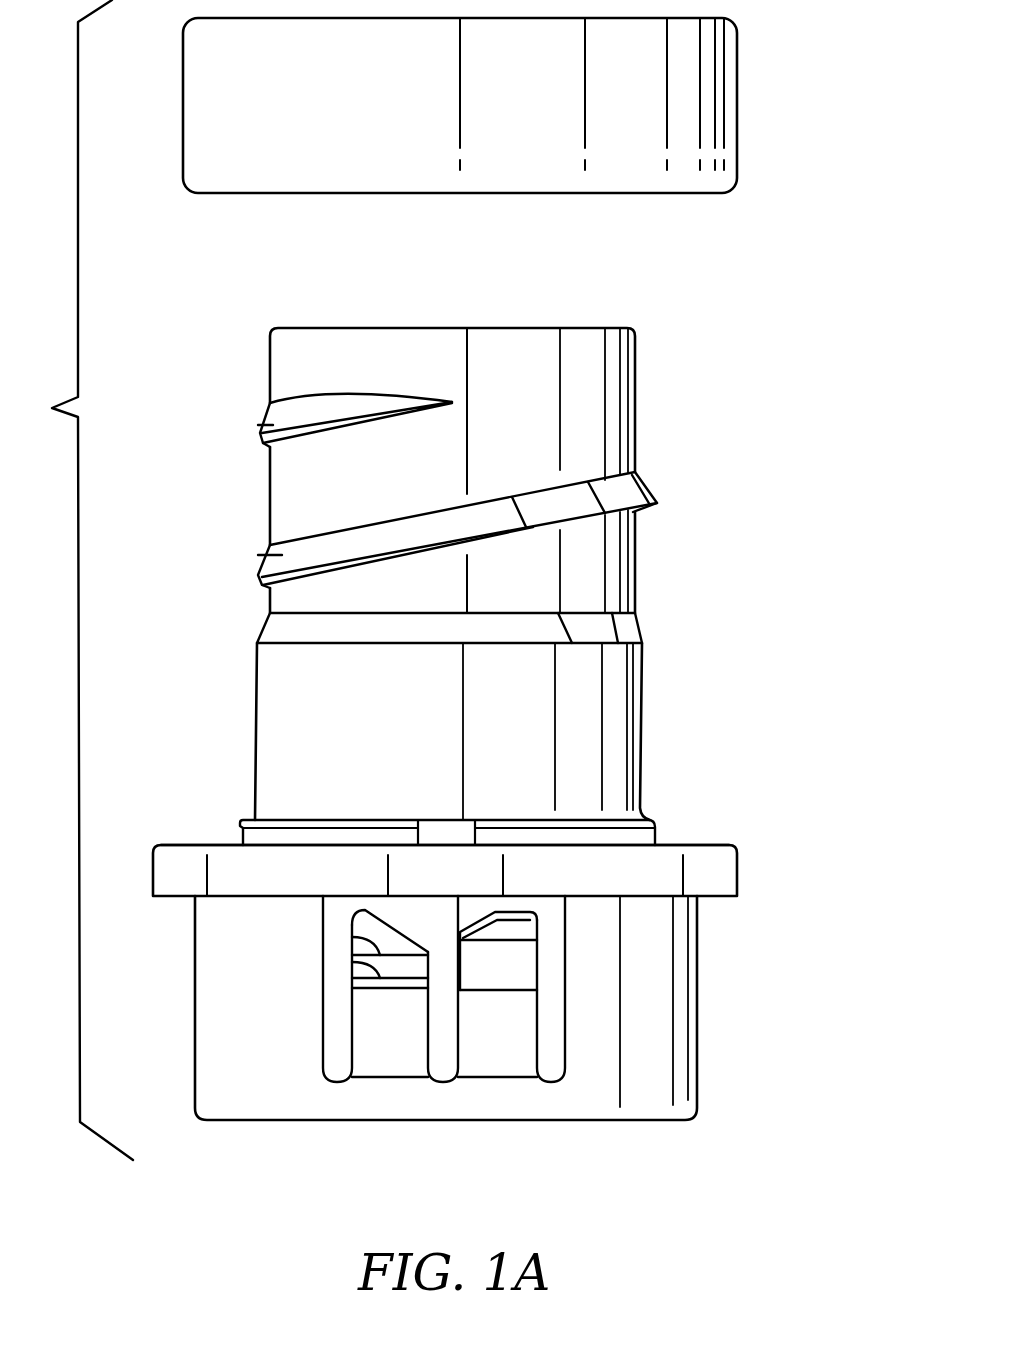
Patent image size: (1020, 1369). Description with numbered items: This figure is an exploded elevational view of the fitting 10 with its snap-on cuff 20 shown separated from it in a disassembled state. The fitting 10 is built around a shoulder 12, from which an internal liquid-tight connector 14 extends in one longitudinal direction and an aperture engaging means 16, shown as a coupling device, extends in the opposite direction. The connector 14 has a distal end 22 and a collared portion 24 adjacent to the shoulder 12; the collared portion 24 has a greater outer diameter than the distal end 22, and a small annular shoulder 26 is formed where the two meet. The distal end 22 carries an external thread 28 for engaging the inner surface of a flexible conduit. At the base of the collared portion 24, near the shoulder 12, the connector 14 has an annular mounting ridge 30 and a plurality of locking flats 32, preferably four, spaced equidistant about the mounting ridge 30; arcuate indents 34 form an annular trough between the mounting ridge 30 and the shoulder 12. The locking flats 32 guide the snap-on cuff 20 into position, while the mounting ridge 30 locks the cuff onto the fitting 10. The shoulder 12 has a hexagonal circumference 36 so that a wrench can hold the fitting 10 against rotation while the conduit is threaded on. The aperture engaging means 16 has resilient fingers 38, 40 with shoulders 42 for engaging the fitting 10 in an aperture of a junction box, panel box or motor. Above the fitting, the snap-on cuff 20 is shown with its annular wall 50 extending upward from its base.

The fitting 10 is at (486, 740).
The shoulder 12 is at (420, 855).
The internal liquid-tight connector 14 is at (465, 567).
The aperture engaging means 16 is at (453, 1031).
The snap-on cuff 20 is at (514, 99).
The distal end 22 is at (603, 358).
The collared portion 24 is at (588, 680).
The small annular shoulder 26 is at (637, 625).
The external thread 28 is at (273, 427).
The annular mounting ridge 30 is at (462, 790).
The locking flats 32 is at (238, 838).
The arcuate indents 34 is at (372, 832).
The hexagonal circumference 36 is at (597, 883).
The resilient finger 38 is at (382, 1058).
The resilient finger 40 is at (492, 1050).
The shoulders 42 is at (355, 937).
The annular wall 50 is at (676, 48).